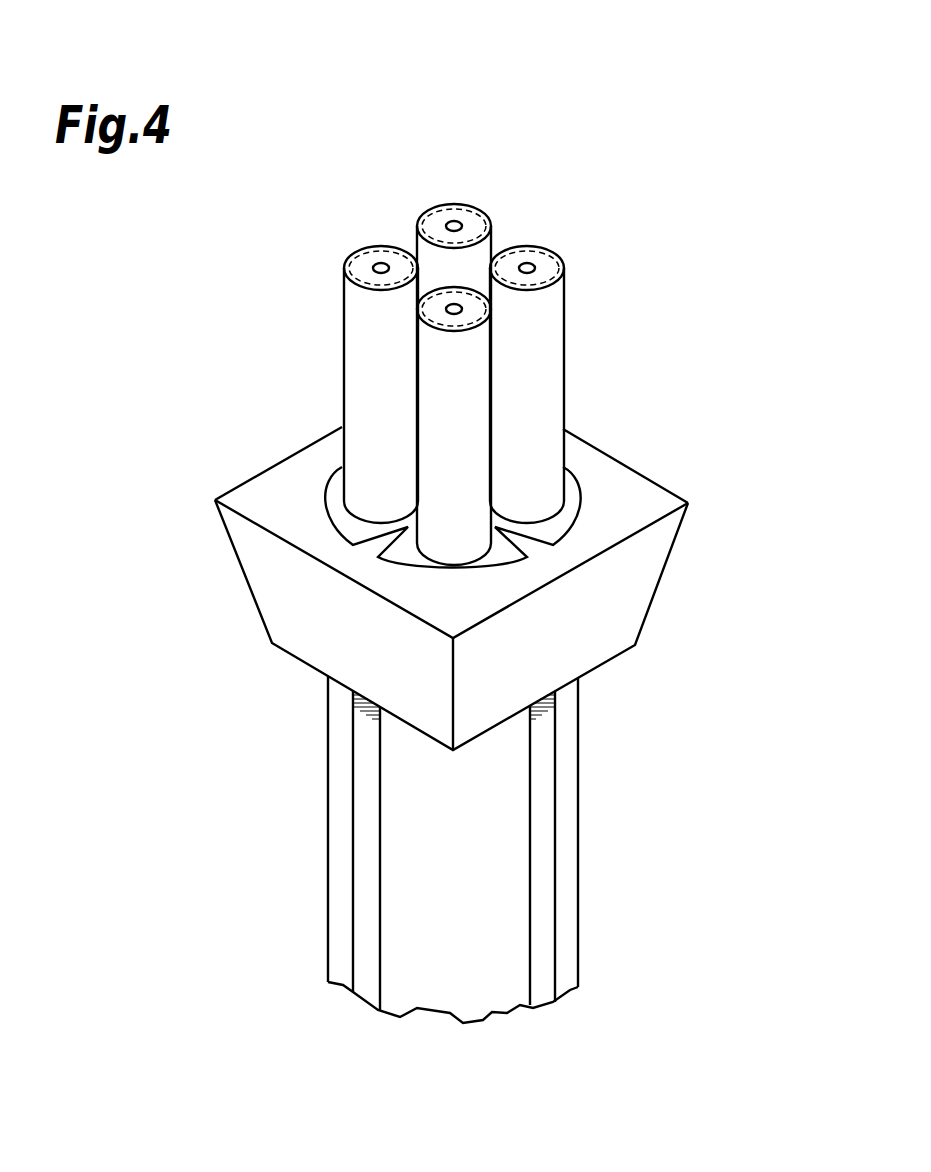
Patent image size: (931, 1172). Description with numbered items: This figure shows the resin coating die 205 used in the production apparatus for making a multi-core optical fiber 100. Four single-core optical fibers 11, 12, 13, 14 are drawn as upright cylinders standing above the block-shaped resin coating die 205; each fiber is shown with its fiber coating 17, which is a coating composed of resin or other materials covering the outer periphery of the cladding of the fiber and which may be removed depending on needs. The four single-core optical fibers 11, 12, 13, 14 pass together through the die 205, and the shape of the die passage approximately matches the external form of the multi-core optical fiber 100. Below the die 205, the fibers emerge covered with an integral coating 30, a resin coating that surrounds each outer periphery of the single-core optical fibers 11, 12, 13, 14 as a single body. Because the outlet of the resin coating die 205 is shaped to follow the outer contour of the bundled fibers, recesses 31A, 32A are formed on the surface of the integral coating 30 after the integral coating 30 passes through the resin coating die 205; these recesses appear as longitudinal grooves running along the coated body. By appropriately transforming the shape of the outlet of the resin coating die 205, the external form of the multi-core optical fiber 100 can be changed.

The single-core optical fiber 11 is at (367, 318).
The single-core optical fiber 12 is at (427, 433).
The single-core optical fiber 13 is at (547, 338).
The single-core optical fiber 14 is at (490, 240).
The fiber coating 17 is at (360, 247).
The resin coating die 205 is at (585, 613).
The multi-core optical fiber 100 is at (526, 893).
The integral coating 30 is at (465, 960).
The recess 31A is at (363, 948).
The recess 32A is at (545, 950).